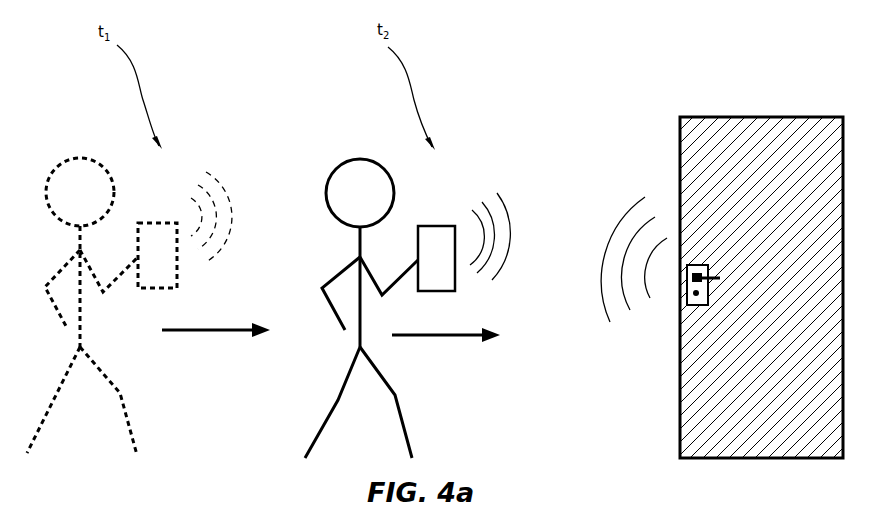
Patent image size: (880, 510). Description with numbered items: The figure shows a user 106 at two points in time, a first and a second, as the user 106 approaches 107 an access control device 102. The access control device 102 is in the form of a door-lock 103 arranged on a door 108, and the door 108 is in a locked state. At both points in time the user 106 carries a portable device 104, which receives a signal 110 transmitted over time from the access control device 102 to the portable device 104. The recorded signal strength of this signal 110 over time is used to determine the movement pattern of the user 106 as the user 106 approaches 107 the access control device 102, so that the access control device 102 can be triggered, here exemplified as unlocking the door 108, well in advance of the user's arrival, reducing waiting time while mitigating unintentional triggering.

The access control device 102 is at (687, 306).
The door-lock 103 is at (697, 307).
The portable device 104 is at (445, 264).
The user 106 is at (335, 272).
The approach 107 is at (208, 332).
The door 108 is at (695, 443).
The signal 110 is at (617, 233).